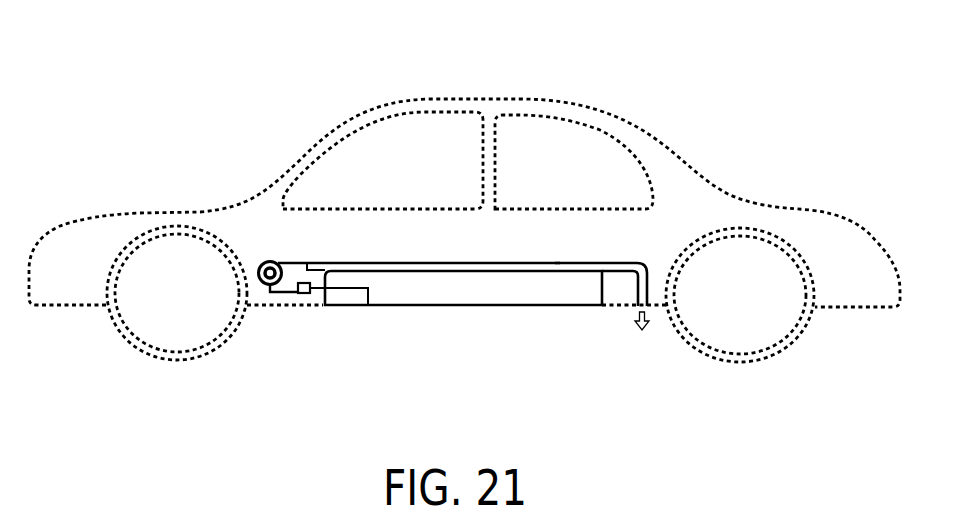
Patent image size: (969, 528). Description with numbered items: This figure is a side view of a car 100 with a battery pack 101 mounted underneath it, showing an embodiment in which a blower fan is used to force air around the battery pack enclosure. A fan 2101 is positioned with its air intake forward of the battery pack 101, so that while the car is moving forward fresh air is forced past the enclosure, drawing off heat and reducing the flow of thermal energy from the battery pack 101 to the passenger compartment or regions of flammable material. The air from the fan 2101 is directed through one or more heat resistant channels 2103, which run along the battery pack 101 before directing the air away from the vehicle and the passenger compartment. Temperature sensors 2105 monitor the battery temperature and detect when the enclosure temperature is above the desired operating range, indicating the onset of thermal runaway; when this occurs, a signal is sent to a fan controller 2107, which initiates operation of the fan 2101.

The car 100 is at (757, 120).
The battery pack 101 is at (557, 285).
The fan 2101 is at (267, 260).
The heat resistant channels 2103 is at (552, 264).
The temperature sensors 2105 is at (368, 306).
The fan controller 2107 is at (310, 295).